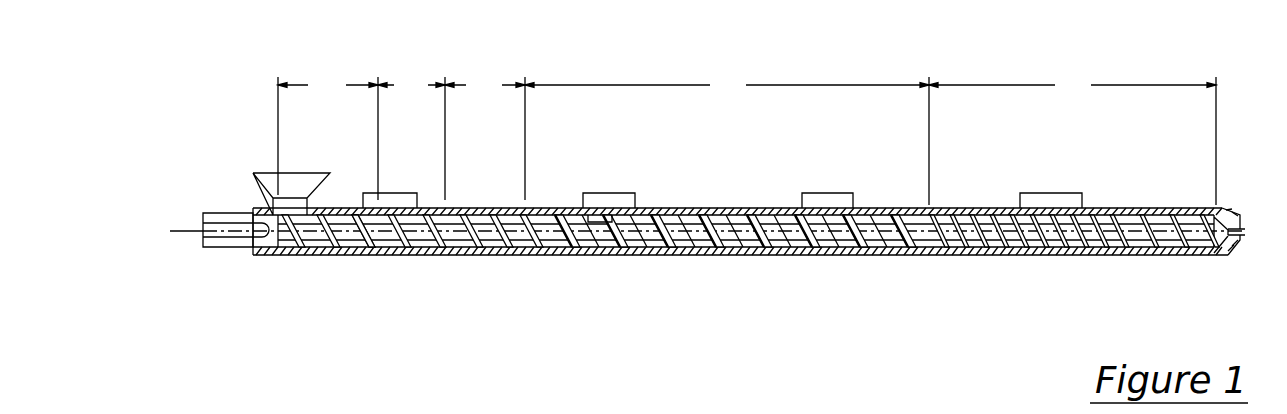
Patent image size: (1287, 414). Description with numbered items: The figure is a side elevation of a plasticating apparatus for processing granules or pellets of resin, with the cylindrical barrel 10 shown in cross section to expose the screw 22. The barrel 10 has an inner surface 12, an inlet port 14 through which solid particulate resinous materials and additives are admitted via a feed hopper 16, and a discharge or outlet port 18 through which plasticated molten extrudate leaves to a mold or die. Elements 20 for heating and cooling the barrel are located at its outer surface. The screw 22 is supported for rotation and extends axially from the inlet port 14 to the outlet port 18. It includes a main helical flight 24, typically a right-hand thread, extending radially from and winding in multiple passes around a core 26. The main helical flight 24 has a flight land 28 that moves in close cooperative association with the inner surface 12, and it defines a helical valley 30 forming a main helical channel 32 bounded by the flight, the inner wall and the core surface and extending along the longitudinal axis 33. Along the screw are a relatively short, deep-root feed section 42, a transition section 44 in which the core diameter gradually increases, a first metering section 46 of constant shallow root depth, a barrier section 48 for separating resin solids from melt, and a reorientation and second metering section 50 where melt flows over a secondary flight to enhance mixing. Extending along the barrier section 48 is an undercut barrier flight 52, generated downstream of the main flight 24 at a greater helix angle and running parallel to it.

The barrel 10 is at (468, 210).
The inner surface 12 is at (1195, 225).
The inlet port 14 is at (290, 207).
The feed hopper 16 is at (266, 195).
The outlet port 18 is at (1237, 236).
The heating and cooling elements 20 is at (1065, 197).
The screw 22 is at (947, 223).
The main helical flight 24 is at (383, 253).
The core 26 is at (407, 253).
The flight land 28 is at (637, 253).
The helical valley 30 is at (570, 253).
The main helical channel 32 is at (370, 253).
The longitudinal axis 33 is at (970, 258).
The feed section 42 is at (328, 131).
The transition section 44 is at (411, 134).
The first metering section 46 is at (485, 134).
The barrier section 48 is at (727, 136).
The reorientation and second metering section 50 is at (1072, 136).
The barrier flight 52 is at (597, 215).